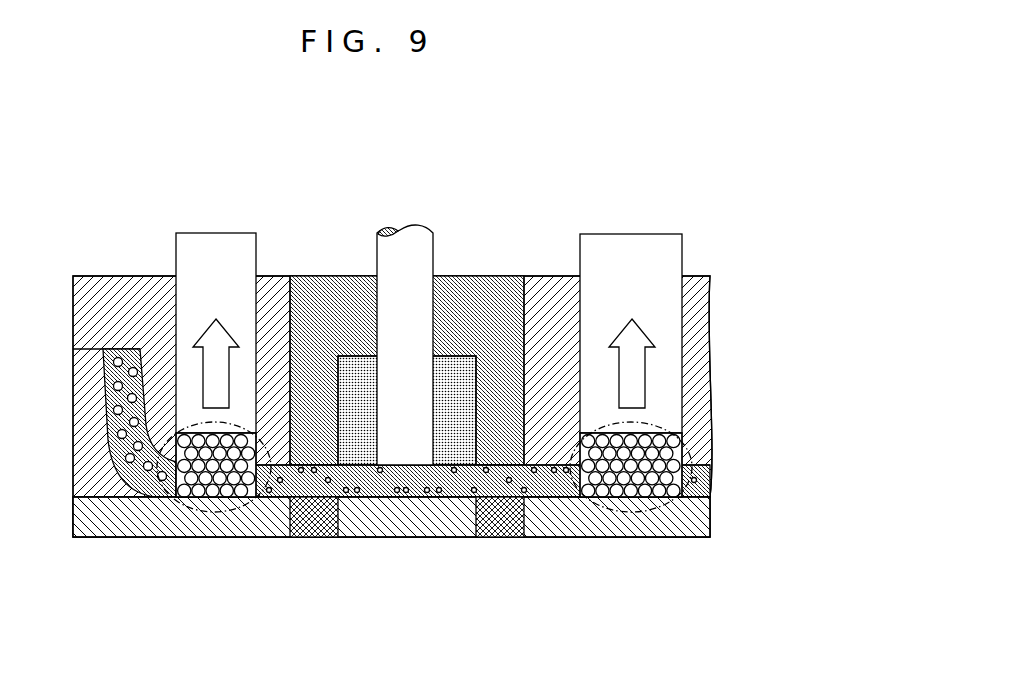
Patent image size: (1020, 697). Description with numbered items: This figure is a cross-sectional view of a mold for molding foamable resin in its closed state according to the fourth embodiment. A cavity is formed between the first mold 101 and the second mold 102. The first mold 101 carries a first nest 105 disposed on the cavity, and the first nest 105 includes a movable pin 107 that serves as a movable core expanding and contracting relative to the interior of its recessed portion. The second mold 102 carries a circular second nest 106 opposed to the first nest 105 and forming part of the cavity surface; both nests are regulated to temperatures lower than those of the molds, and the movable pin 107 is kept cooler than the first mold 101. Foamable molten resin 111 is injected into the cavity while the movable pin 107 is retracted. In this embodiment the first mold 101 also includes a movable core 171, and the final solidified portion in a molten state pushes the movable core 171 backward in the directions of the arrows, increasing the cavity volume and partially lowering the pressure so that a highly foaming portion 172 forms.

The first mold 101 is at (553, 278).
The second mold 102 is at (712, 516).
The first nest 105 is at (470, 278).
The second nest 106 is at (503, 538).
The movable pin 107 is at (375, 250).
The foamable molten resin 111 is at (712, 481).
The movable core 171 is at (221, 250).
The highly foaming portion 172 is at (186, 538).